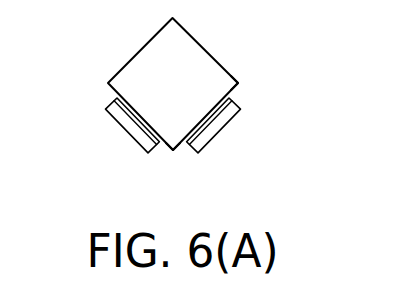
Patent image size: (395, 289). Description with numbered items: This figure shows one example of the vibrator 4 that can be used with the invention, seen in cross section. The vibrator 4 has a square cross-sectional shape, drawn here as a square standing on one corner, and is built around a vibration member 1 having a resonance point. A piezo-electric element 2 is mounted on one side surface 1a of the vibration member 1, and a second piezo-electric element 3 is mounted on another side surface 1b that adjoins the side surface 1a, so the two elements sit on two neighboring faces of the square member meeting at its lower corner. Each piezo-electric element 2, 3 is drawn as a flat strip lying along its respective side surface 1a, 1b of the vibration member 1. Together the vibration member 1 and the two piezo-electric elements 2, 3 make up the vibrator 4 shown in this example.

The vibration member 1 is at (206, 62).
The side surface 1a is at (172, 150).
The side surface 1b is at (238, 88).
The piezo-electric element 2 is at (130, 135).
The piezo-electric element 3 is at (220, 130).
The vibrator 4 is at (114, 45).